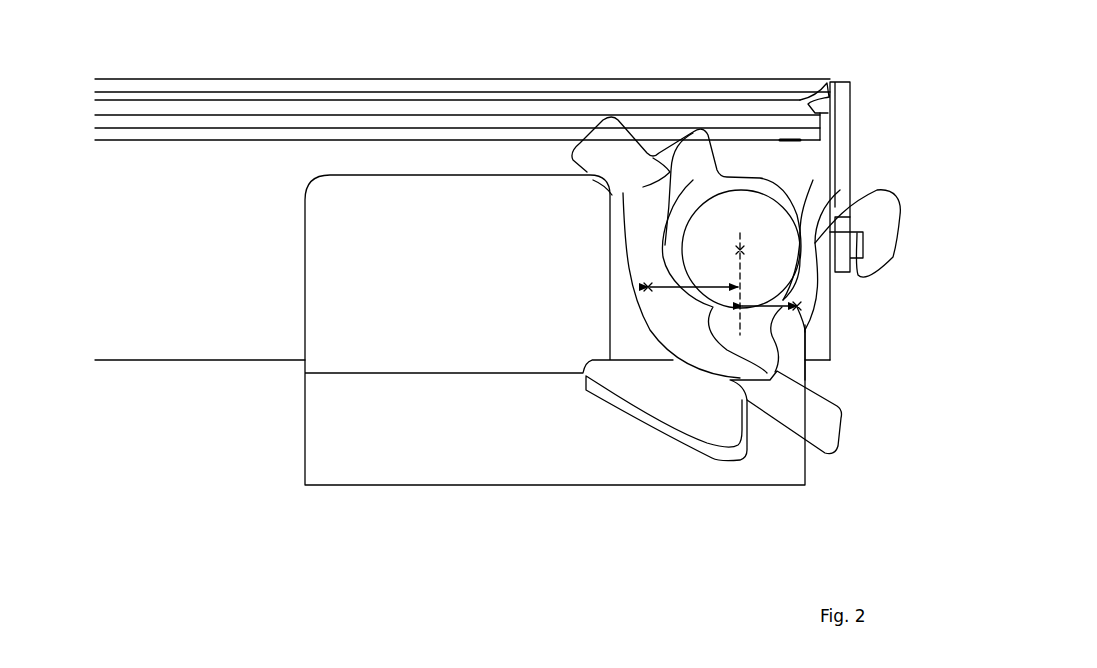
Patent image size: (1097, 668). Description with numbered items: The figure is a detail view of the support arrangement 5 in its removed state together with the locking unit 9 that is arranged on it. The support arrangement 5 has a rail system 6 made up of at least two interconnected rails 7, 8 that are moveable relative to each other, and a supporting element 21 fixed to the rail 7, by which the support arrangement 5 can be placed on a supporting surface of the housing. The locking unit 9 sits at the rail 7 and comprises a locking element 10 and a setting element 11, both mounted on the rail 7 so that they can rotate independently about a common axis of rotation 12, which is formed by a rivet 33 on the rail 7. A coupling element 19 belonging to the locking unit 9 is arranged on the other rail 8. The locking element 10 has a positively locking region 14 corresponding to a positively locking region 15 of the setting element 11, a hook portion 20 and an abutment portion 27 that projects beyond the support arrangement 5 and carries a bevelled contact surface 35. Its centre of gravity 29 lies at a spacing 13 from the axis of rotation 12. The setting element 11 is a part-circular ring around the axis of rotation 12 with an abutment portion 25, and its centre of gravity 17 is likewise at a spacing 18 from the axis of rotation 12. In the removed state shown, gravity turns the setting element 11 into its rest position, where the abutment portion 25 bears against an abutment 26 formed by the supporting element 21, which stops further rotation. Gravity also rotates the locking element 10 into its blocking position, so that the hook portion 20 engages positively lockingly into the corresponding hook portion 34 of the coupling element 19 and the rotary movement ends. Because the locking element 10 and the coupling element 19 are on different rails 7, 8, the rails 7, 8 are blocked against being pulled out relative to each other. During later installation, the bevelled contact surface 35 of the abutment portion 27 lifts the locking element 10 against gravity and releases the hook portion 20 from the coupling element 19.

The support arrangement 5 is at (876, 74).
The rail system 6 is at (84, 110).
The rail 7 is at (180, 307).
The rail 8 is at (167, 110).
The locking unit 9 is at (687, 402).
The locking element 10 is at (857, 208).
The setting element 11 is at (670, 152).
The axis of rotation 12 is at (742, 248).
The spacing 13 is at (806, 215).
The positively locking region 14 is at (816, 240).
The positively locking region 15 is at (778, 182).
The centre of gravity 17 is at (636, 345).
The spacing 18 is at (703, 128).
The coupling element 19 is at (841, 84).
The hook portion 20 is at (875, 263).
The supporting element 21 is at (362, 437).
The abutment portion 25 is at (592, 137).
The abutment 26 is at (590, 180).
The abutment portion 27 is at (783, 398).
The centre of gravity 29 is at (808, 330).
The rivet 33 is at (780, 368).
The hook portion 34 is at (860, 240).
The bevelled contact surface 35 is at (790, 435).